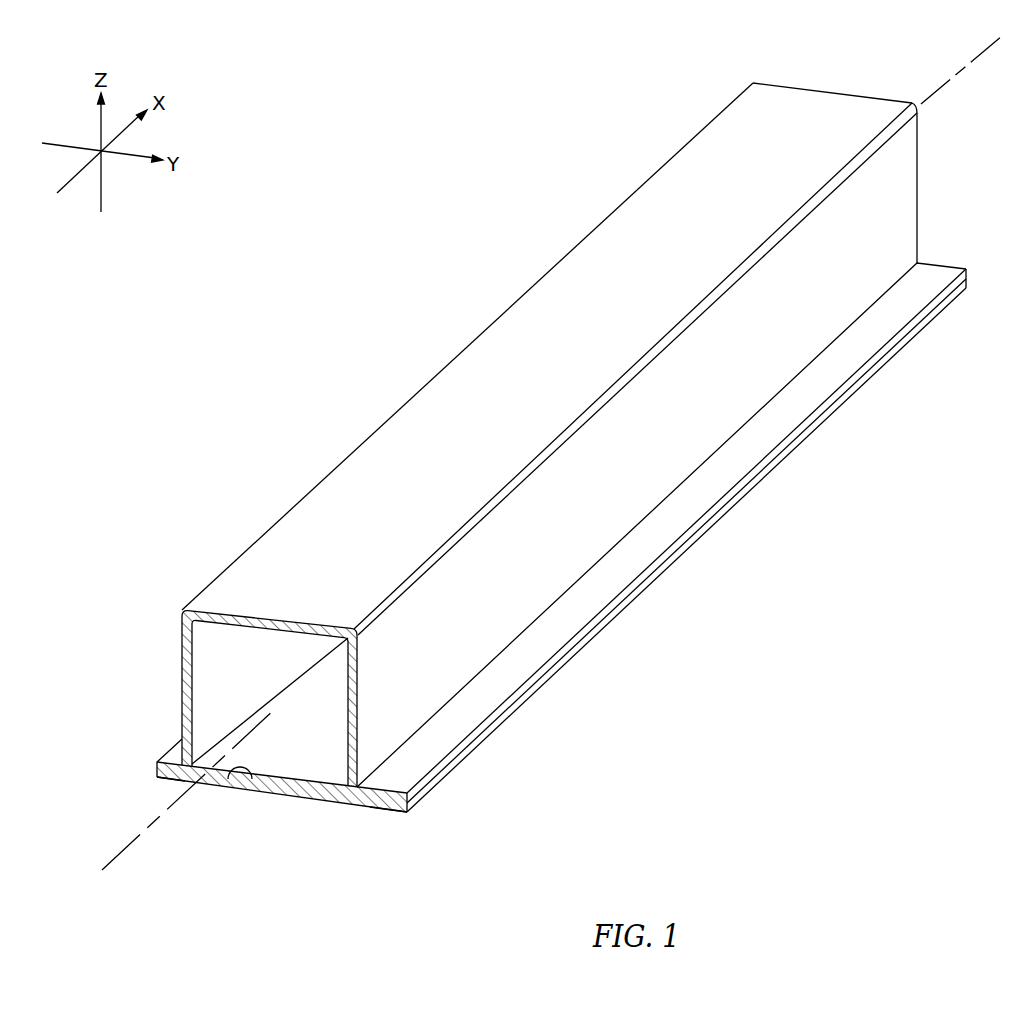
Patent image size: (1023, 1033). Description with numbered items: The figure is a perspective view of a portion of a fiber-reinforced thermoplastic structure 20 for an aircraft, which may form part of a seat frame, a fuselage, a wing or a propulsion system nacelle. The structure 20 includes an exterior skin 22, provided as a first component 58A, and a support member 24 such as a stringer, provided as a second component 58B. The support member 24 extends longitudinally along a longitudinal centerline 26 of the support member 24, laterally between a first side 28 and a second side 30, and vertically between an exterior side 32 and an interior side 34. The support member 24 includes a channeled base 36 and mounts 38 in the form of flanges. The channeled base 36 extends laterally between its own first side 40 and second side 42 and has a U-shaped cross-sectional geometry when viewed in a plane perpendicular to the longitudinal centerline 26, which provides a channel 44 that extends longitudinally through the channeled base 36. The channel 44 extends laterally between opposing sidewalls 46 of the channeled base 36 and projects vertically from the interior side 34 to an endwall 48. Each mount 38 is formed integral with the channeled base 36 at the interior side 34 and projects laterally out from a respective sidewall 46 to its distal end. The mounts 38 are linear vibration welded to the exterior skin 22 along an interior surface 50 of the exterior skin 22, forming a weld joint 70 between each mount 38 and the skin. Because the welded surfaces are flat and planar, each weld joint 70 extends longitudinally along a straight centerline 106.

The fiber-reinforced thermoplastic structure 20 is at (409, 226).
The exterior skin 22 is at (517, 580).
The first component 58A is at (441, 798).
The support member 24 is at (532, 359).
The second component 58B is at (240, 547).
The longitudinal centerline 26 is at (116, 862).
The first side 28 is at (158, 775).
The second side 30 is at (410, 805).
The exterior side 32 is at (211, 606).
The interior side 34 is at (377, 800).
The channeled base 36 is at (168, 657).
The mounts 38 is at (154, 744).
The first side of the channeled base 40 is at (182, 685).
The second side of the channeled base 42 is at (360, 712).
The channel 44 is at (307, 750).
The sidewalls 46 is at (182, 638).
The endwall 48 is at (293, 617).
The interior surface 50 is at (229, 772).
The weld joint 70 is at (162, 794).
The straight centerline 106 is at (648, 580).